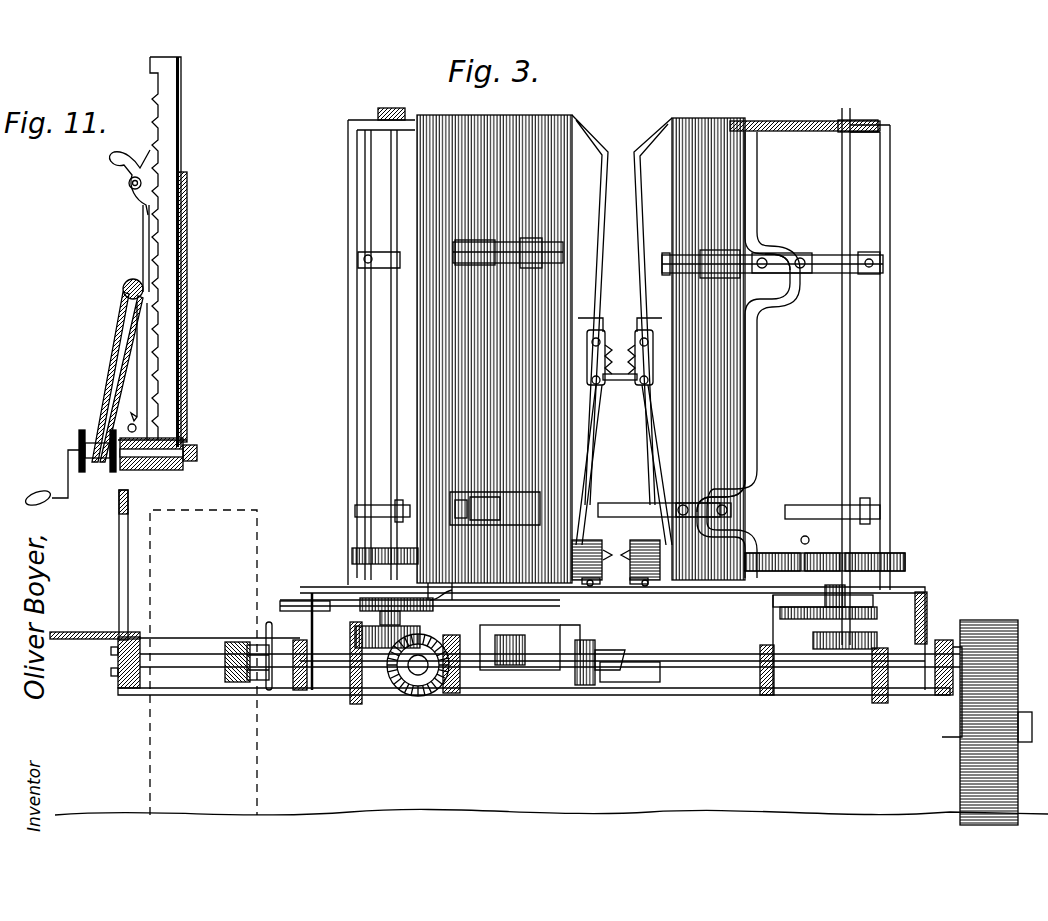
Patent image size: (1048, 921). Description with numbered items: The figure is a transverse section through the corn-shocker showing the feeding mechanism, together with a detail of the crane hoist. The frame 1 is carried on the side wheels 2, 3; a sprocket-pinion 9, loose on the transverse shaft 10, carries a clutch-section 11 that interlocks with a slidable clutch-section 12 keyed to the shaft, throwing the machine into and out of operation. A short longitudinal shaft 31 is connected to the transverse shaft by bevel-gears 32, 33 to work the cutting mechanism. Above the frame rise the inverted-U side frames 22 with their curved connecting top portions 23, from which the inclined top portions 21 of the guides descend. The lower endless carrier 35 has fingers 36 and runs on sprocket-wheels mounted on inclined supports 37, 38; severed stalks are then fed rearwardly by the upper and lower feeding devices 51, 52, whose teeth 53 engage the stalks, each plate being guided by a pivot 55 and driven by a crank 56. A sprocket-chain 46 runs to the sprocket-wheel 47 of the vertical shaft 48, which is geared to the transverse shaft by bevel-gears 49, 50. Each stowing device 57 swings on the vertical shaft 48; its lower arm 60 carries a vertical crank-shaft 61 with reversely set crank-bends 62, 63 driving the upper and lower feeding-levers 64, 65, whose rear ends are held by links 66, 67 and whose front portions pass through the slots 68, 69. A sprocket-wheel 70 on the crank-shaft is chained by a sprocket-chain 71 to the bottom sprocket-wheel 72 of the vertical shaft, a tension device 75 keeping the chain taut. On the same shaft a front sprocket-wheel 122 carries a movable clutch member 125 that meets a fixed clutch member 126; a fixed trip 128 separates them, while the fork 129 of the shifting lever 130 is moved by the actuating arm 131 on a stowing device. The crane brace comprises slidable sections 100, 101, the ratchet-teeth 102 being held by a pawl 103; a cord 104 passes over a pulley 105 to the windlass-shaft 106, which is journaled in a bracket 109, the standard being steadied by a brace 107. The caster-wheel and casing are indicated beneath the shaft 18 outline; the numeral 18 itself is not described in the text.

In FIG. 3, the frame 1 is at (130, 690).
In FIG. 3, the side wheel 2 is at (158, 546).
In FIG. 3, the side wheel 3 is at (975, 625).
In FIG. 3, the sprocket-pinion 9 is at (235, 682).
In FIG. 3, the transverse shaft 10 is at (290, 690).
In FIG. 3, the clutch-section 11 is at (255, 685).
In FIG. 3, the slidable clutch-section 12 is at (268, 690).
In FIG. 3, the shaft 18 is at (95, 625).
In FIG. 3, the inclined top portion 21 is at (604, 183).
In FIG. 3, the side frame 22 is at (890, 228).
In FIG. 3, the connecting top portion 23 is at (378, 115).
In FIG. 3, the longitudinal shaft 31 is at (418, 676).
In FIG. 3, the bevel-gear 32 is at (410, 690).
In FIG. 3, the bevel-gear 33 is at (450, 695).
In FIG. 3, the lower endless carrier 35 is at (616, 547).
In FIG. 3, the fingers or projections 36 is at (615, 318).
In FIG. 3, the inclined support 37 is at (600, 418).
In FIG. 3, the inclined support 38 is at (616, 560).
In FIG. 3, the sprocket-chain 46 is at (775, 612).
In FIG. 3, the sprocket-wheel 47 is at (360, 600).
In FIG. 3, the vertical shaft 48 is at (391, 190).
In FIG. 3, the bevel-gear 49 is at (352, 632).
In FIG. 3, the bevel-gear 50 is at (355, 700).
In FIG. 3, the upper feeding device 51 is at (620, 381).
In FIG. 3, the lower feeding device 52 is at (636, 585).
In FIG. 3, the teeth 53 is at (620, 359).
In FIG. 3, the guiding-pivot or fastening device 55 is at (619, 355).
In FIG. 3, the crank 56 is at (660, 598).
In FIG. 3, the packing or stowing device 57 is at (475, 118).
In FIG. 3, the lower arm 60 is at (745, 560).
In FIG. 3, the vertical crank-shaft 61 is at (760, 192).
In FIG. 3, the upper crank-bend 62 is at (772, 248).
In FIG. 3, the lower crank-bend 63 is at (722, 492).
In FIG. 3, the upper feeding-lever 64 is at (672, 258).
In FIG. 3, the lower feeding-lever 65 is at (628, 503).
In FIG. 3, the link 66 is at (845, 272).
In FIG. 3, the link 67 is at (405, 512).
In FIG. 3, the upper slot 68 is at (712, 250).
In FIG. 3, the lower slot 69 is at (590, 508).
In FIG. 3, the sprocket-wheel 70 is at (765, 553).
In FIG. 3, the sprocket-chain 71 is at (800, 556).
In FIG. 3, the bottom sprocket-wheel 72 is at (826, 553).
In FIG. 3, the tension device 75 is at (811, 534).
In FIG. 11, the upper brace section 100 is at (182, 92).
In FIG. 11, the lower brace section 101 is at (190, 292).
In FIG. 11, the ratchet-teeth 102 is at (147, 240).
In FIG. 11, the pawl 103 is at (128, 178).
In FIG. 11, the cord 104 is at (118, 368).
In FIG. 11, the pulley 105 is at (125, 283).
In FIG. 11, the windlass-shaft 106 is at (106, 470).
In FIG. 11, the brace 107 is at (119, 560).
In FIG. 11, the bracket 109 is at (160, 470).
In FIG. 3, the front sprocket-wheel 122 is at (585, 686).
In FIG. 3, the movable clutch member 125 is at (615, 686).
In FIG. 3, the fixed clutch member 126 is at (640, 682).
In FIG. 3, the fixed trip 128 is at (540, 612).
In FIG. 3, the fork or bifurcated arm 129 is at (592, 636).
In FIG. 3, the shifting lever 130 is at (292, 590).
In FIG. 3, the actuating arm or device 131 is at (447, 598).